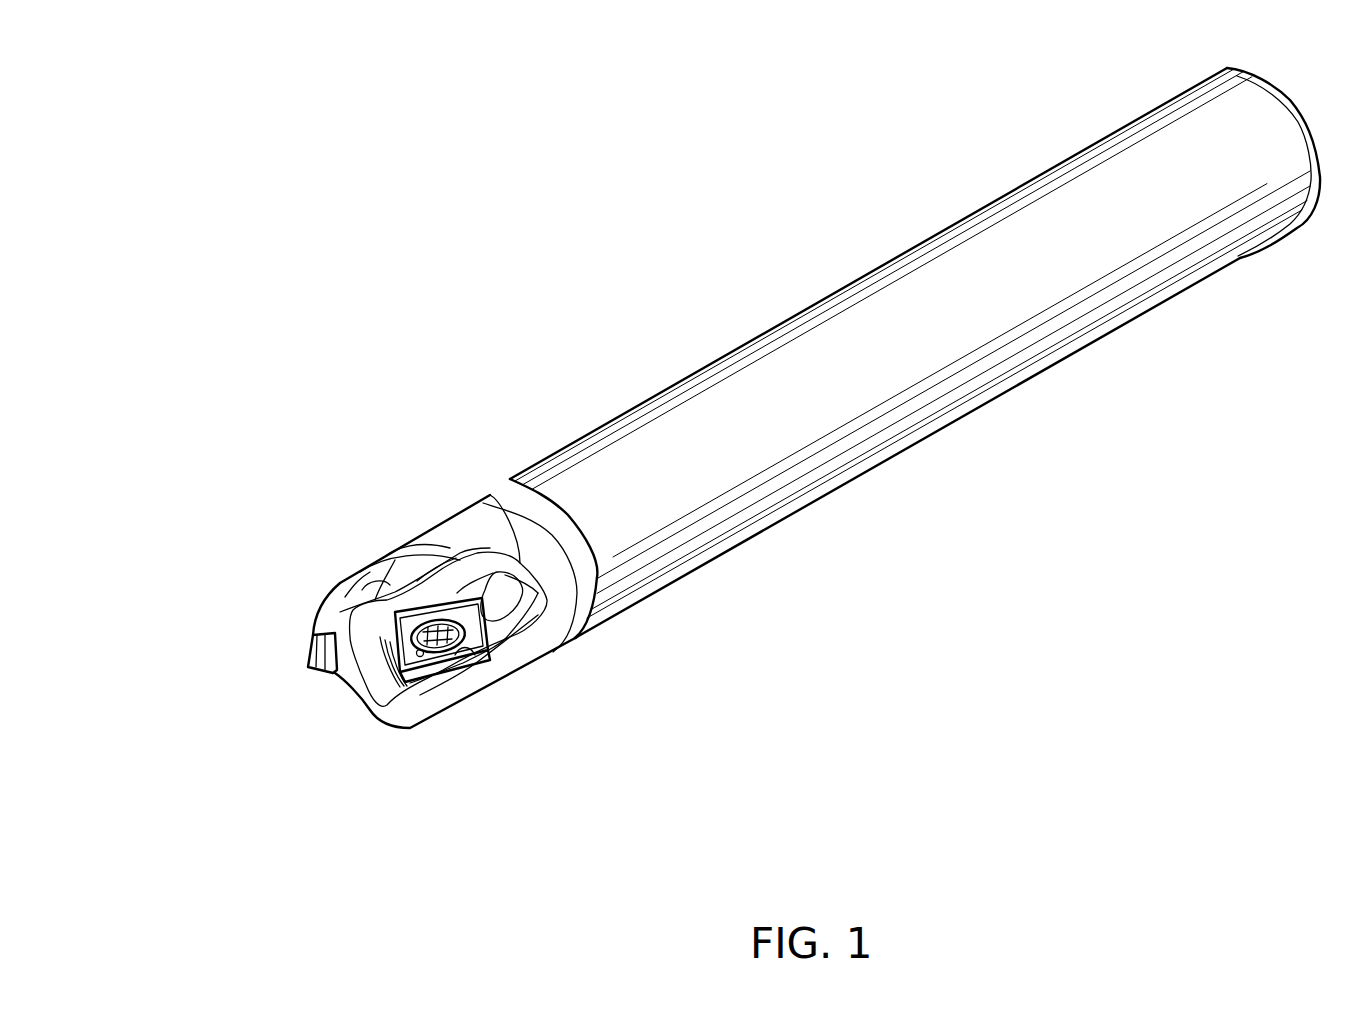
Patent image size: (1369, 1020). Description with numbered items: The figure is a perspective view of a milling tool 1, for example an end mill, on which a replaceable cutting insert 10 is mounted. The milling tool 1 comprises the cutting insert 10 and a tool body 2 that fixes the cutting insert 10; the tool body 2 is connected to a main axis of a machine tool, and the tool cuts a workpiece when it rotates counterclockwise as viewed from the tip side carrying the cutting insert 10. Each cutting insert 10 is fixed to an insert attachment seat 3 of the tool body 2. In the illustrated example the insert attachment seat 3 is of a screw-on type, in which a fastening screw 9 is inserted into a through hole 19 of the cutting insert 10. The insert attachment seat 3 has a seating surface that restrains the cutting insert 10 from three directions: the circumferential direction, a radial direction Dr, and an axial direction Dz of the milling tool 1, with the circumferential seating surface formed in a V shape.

The milling tool 1 is at (751, 443).
The tool body 2 is at (880, 468).
The insert attachment seat 3 is at (310, 643).
The fastening screw 9 is at (430, 620).
The cutting insert 10 is at (455, 600).
The through hole 19 is at (425, 672).
The radial direction Dr is at (340, 657).
The axial direction Dz is at (333, 683).